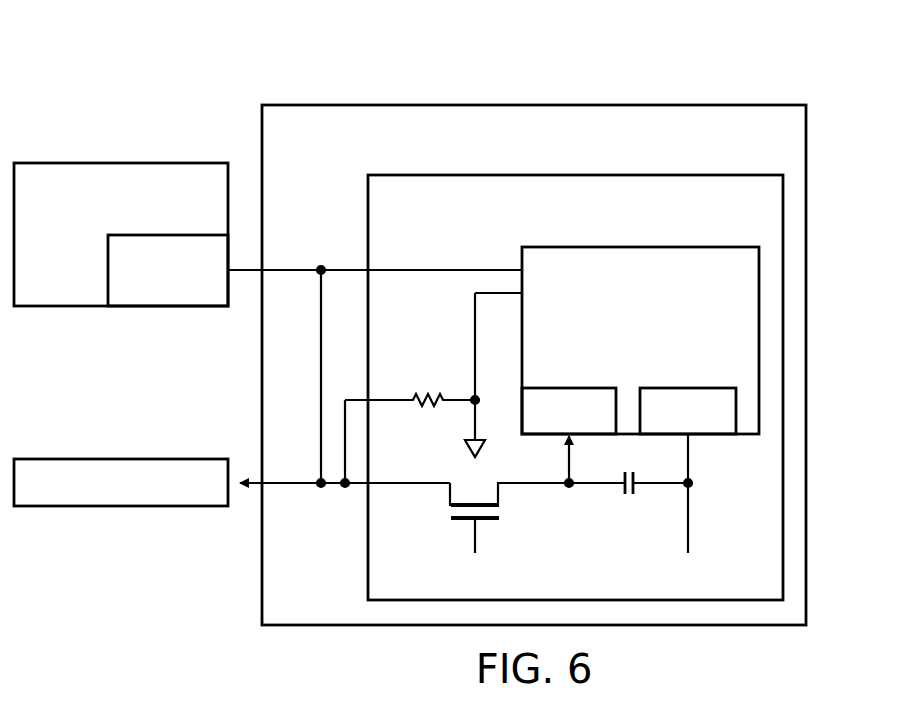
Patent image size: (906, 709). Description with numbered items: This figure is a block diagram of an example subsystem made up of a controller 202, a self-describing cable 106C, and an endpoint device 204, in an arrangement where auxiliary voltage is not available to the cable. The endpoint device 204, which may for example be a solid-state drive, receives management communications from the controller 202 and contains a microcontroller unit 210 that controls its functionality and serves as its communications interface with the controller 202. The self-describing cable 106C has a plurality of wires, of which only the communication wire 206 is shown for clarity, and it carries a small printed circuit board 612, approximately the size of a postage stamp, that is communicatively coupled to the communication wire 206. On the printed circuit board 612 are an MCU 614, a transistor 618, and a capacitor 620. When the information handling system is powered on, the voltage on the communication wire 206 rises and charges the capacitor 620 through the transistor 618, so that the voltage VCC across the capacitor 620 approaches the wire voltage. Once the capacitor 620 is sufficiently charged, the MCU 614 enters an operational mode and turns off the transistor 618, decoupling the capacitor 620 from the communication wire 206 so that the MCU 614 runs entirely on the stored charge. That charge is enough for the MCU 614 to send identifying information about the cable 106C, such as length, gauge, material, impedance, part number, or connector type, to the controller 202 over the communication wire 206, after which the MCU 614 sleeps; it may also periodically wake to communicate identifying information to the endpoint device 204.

The self-describing cable 106C is at (655, 100).
The printed circuit board 612 is at (725, 170).
The MCU 614 is at (618, 350).
The transistor 618 is at (487, 521).
The capacitor 620 is at (629, 495).
The endpoint device 204 is at (120, 162).
The microcontroller unit 210 is at (118, 268).
The controller 202 is at (120, 508).
The communication wire 206 is at (285, 485).